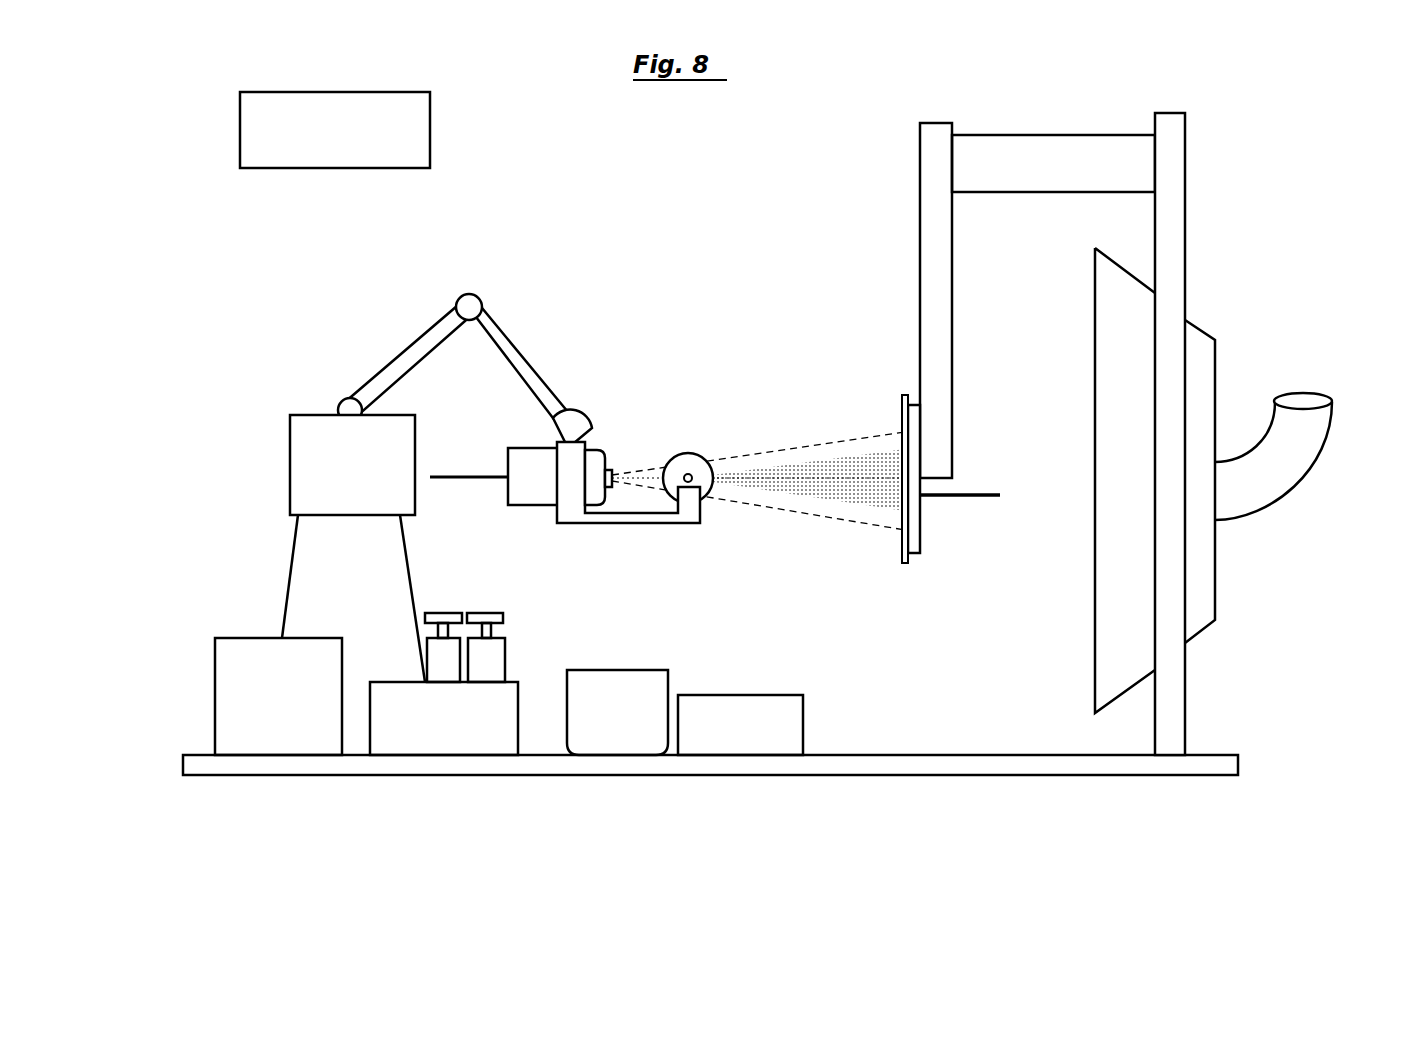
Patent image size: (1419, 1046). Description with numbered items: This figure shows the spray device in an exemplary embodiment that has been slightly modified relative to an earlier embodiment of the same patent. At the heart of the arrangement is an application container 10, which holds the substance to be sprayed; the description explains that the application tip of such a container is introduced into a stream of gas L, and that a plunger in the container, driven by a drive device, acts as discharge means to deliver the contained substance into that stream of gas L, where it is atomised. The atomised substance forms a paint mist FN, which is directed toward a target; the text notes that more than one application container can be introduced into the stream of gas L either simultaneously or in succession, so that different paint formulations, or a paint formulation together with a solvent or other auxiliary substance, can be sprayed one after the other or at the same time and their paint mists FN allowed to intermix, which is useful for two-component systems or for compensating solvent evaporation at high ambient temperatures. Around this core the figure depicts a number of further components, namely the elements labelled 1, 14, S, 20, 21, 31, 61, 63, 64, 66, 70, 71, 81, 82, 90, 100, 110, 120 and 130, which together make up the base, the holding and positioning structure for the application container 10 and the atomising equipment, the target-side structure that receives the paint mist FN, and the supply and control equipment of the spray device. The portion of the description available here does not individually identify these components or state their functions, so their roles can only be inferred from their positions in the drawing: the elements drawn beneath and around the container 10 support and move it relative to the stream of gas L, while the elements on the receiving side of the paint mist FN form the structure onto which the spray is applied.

The base plate 1 is at (930, 765).
The application container 10 is at (683, 455).
The nozzle 14 is at (690, 476).
The stream of gas L is at (748, 452).
The paint mist FN is at (865, 510).
The substrate S is at (905, 560).
The drive unit 20 is at (522, 466).
The rod 21 is at (488, 483).
The stand 31 is at (290, 578).
The post 61 is at (1170, 662).
The holder 63 is at (915, 512).
The rod 64 is at (985, 490).
The frame 66 is at (930, 300).
The housing panel 70 is at (1200, 358).
The exhaust pipe 71 is at (1280, 485).
The supply unit 81 is at (448, 738).
The supply unit 82 is at (255, 738).
The container 90 is at (630, 722).
The control unit 100 is at (260, 122).
The unit 110 is at (773, 715).
The end effector 120 is at (573, 445).
The robot 130 is at (272, 416).